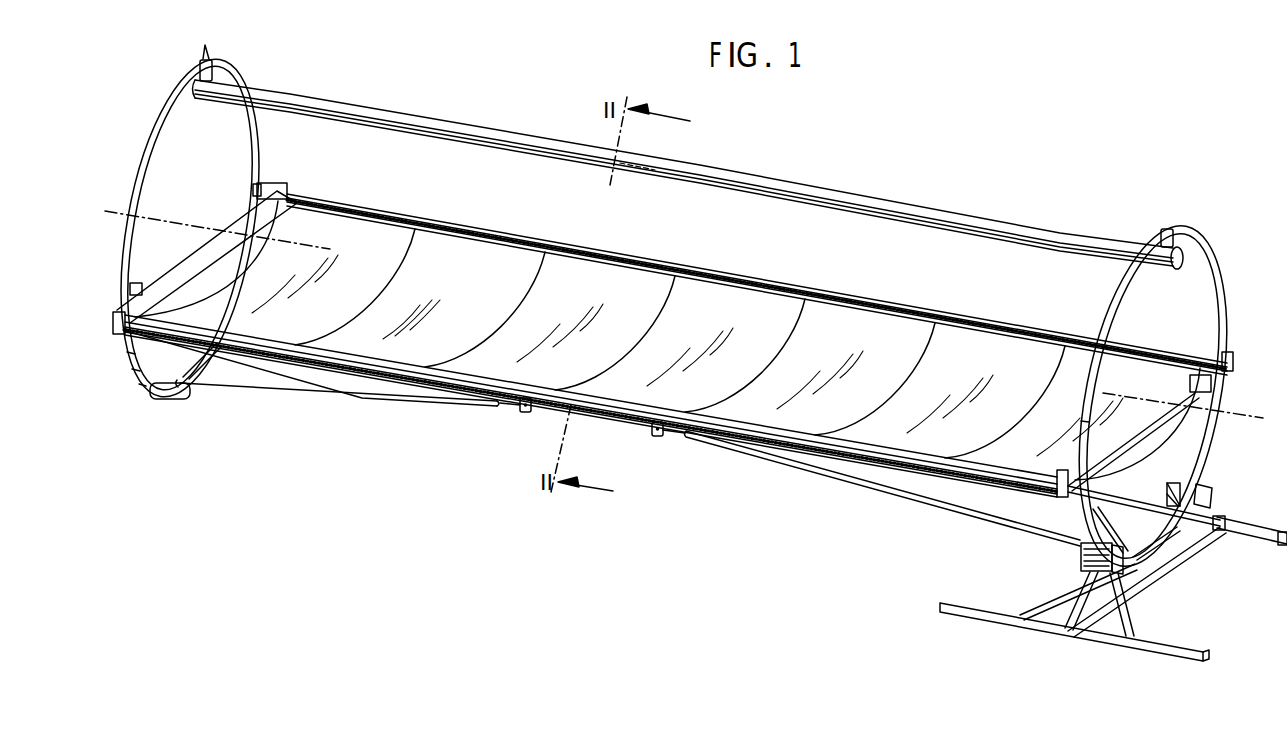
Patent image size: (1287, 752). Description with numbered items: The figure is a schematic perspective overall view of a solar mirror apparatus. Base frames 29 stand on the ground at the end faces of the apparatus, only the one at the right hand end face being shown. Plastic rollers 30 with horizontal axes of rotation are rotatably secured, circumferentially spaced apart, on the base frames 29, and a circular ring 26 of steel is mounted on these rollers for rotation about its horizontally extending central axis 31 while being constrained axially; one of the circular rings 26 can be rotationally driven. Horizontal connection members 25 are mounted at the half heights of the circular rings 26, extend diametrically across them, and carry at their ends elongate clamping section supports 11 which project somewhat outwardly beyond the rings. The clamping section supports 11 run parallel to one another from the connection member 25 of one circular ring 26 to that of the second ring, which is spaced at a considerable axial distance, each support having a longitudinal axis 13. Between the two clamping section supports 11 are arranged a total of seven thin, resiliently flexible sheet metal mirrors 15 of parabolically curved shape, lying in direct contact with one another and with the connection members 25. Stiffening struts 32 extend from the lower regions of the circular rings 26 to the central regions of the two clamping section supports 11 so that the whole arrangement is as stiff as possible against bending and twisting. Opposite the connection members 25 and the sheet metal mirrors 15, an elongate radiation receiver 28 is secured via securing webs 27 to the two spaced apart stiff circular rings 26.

The clamping section support 11 is at (573, 251).
The longitudinal axis 13 is at (1127, 498).
The sheet metal mirror 15 is at (398, 238).
The connection member 25 is at (247, 213).
The circular ring 26 is at (170, 106).
The securing web 27 is at (206, 63).
The radiation receiver 28 is at (772, 181).
The base frame 29 is at (1120, 604).
The plastic roller 30 is at (1081, 560).
The central axis 31 is at (161, 213).
The stiffening strut 32 is at (267, 372).